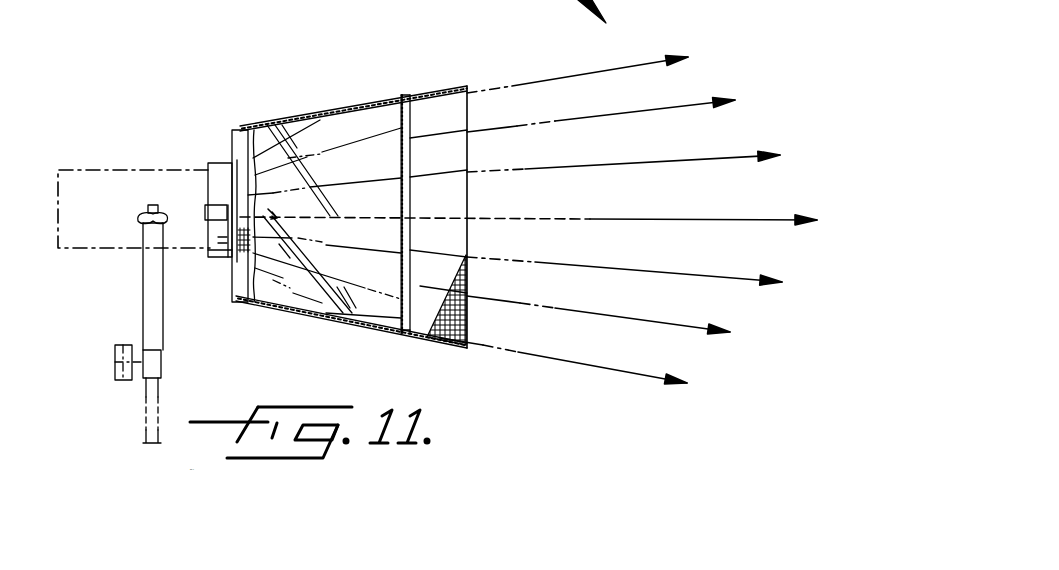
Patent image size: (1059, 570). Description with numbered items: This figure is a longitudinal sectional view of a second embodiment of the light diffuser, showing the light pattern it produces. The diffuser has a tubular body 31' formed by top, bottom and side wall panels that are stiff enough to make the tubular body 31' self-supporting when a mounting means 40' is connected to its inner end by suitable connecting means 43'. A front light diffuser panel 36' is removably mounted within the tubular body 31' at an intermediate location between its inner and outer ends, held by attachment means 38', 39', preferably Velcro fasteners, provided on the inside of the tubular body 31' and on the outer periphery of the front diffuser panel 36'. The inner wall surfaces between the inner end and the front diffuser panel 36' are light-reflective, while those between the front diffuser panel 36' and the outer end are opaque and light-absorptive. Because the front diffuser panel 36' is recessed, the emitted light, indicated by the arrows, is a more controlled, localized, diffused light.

The tubular body 31' is at (413, 196).
The attachment means 39' is at (447, 184).
The front light diffuser panel 36' is at (466, 193).
The attachment means 38' is at (373, 352).
The connecting means 43' is at (194, 239).
The mounting means 40' is at (145, 303).